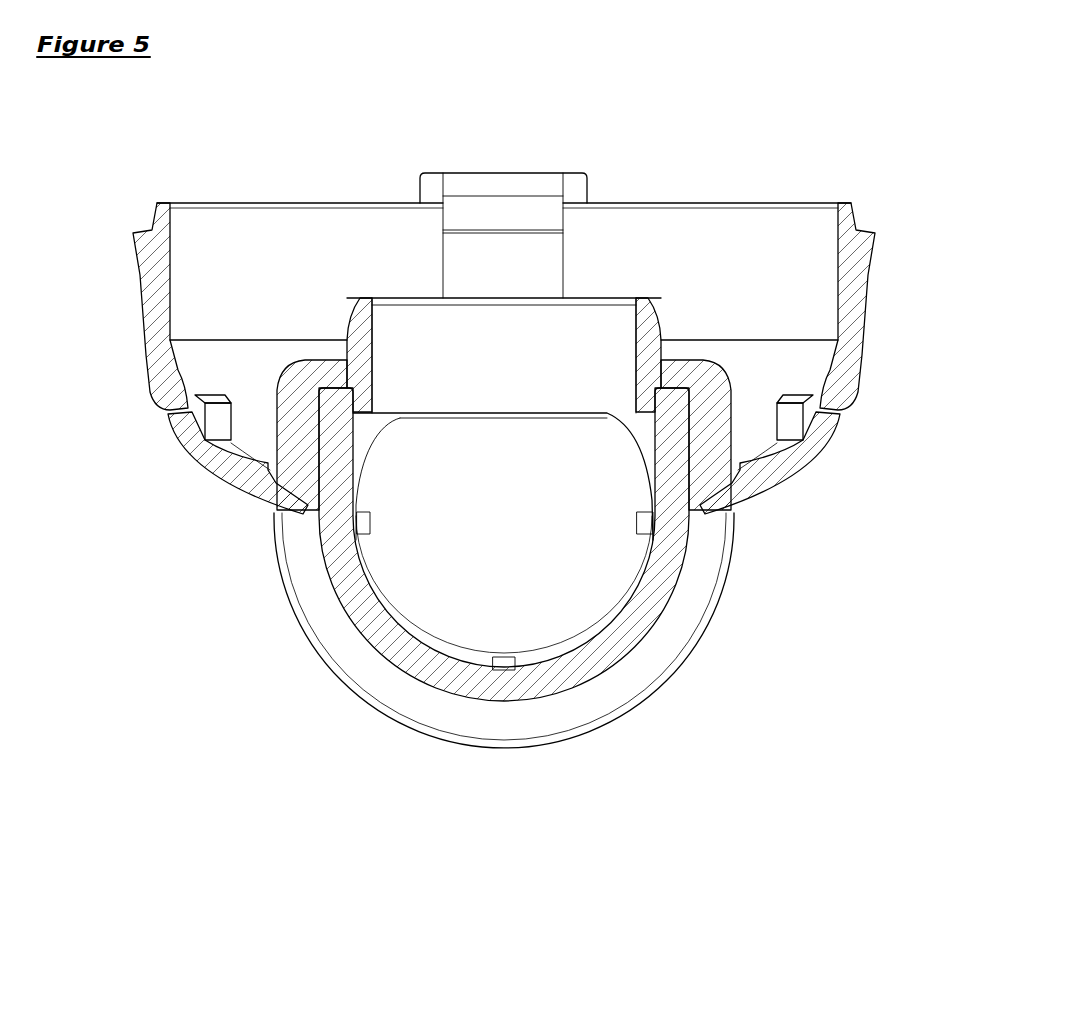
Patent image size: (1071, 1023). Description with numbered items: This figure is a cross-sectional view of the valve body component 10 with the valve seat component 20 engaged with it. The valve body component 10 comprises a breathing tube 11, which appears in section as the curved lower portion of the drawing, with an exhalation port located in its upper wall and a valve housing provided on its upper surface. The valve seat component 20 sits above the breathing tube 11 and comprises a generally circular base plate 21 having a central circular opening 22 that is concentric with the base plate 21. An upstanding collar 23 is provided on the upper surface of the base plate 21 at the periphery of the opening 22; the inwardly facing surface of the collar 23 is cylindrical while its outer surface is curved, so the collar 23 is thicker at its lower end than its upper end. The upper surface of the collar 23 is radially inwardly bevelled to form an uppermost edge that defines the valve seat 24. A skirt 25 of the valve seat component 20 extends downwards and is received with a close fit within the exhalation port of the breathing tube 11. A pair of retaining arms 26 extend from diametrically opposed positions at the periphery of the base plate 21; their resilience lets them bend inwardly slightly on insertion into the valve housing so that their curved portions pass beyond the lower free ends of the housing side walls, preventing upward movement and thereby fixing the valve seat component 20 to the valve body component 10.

The valve body component 10 is at (812, 172).
The breathing tube 11 is at (623, 687).
The valve seat component 20 is at (634, 248).
The base plate 21 is at (323, 373).
The central circular opening 22 is at (495, 388).
The collar 23 is at (650, 333).
The valve seat 24 is at (370, 300).
The skirt 25 is at (363, 398).
The retaining arms 26 is at (203, 461).